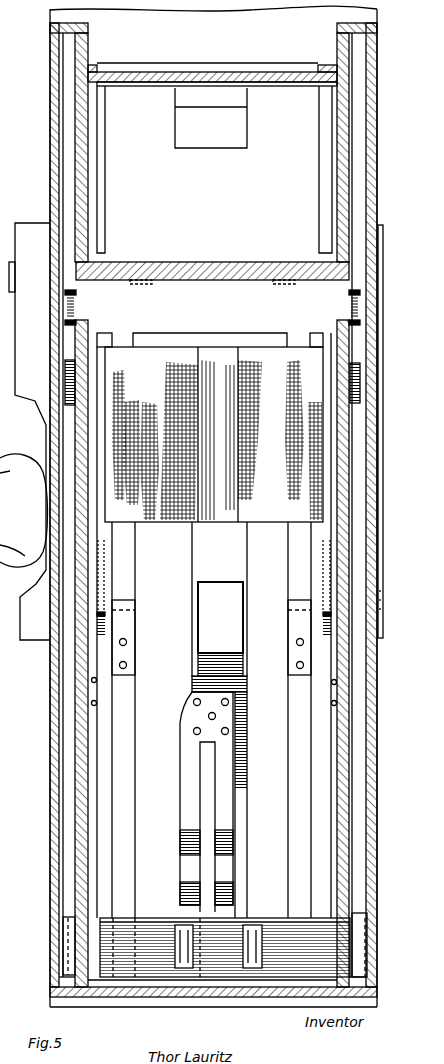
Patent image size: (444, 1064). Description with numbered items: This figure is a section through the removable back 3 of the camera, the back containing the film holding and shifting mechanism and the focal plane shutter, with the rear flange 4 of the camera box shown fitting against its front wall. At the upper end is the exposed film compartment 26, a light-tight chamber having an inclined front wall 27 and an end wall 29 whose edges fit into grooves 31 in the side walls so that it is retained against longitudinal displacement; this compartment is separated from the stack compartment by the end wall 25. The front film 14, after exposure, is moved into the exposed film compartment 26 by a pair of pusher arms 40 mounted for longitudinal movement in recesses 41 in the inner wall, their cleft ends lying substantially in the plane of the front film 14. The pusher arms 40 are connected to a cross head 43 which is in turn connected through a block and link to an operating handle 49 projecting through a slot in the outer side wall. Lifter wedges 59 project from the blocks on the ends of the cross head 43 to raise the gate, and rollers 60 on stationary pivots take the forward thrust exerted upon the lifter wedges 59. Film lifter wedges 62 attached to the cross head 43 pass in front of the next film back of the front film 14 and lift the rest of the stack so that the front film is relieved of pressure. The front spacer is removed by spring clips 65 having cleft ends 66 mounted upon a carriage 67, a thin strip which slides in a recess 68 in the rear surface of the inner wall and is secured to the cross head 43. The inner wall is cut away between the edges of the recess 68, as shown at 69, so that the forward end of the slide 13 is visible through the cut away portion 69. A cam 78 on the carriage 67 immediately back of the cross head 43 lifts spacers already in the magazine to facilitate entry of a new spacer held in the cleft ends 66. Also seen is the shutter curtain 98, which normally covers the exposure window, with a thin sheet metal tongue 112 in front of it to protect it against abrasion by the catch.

The removable back 3 is at (48, 112).
The front film 14 is at (6, 133).
The rear flange 4 is at (29, 237).
The operating handle 49 is at (24, 519).
The end wall 29 is at (234, 74).
The inclined front wall 27 is at (286, 100).
The grooves 31 is at (326, 70).
The end wall 25 is at (214, 270).
The exposed film compartment 26 is at (268, 245).
The rollers 60 is at (78, 306).
The curtain 98 is at (120, 410).
The tongue 112 is at (232, 484).
The recesses 41 is at (124, 554).
The pusher arms 40 is at (128, 634).
The recess 68 is at (208, 554).
The cut away portion 69 is at (236, 620).
The slide 13 is at (244, 656).
The carriage 67 is at (246, 691).
The spring clips 65 is at (186, 830).
The cleft ends 66 is at (184, 904).
The lifter wedges 59 is at (74, 744).
The film lifter wedges 62 is at (95, 768).
The cross head 43 is at (108, 950).
The cam 78 is at (250, 966).